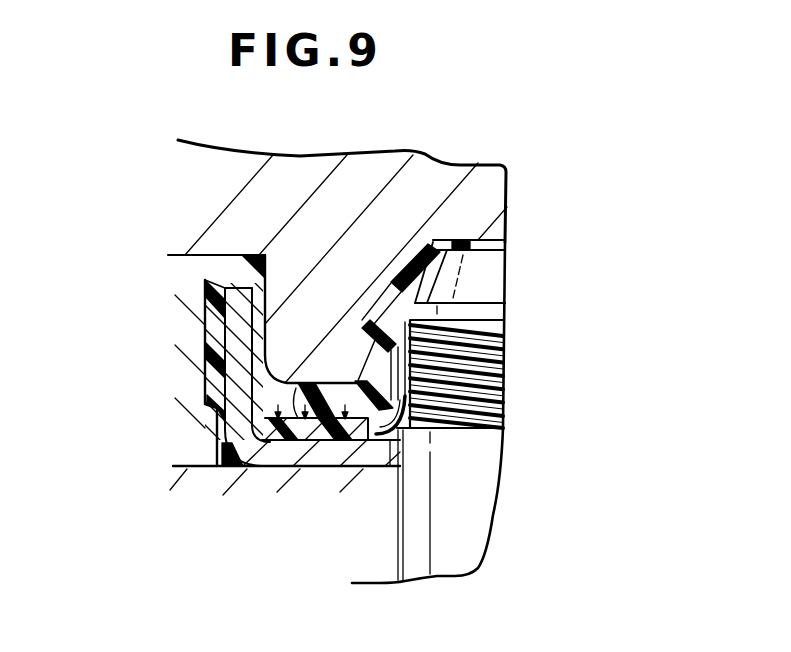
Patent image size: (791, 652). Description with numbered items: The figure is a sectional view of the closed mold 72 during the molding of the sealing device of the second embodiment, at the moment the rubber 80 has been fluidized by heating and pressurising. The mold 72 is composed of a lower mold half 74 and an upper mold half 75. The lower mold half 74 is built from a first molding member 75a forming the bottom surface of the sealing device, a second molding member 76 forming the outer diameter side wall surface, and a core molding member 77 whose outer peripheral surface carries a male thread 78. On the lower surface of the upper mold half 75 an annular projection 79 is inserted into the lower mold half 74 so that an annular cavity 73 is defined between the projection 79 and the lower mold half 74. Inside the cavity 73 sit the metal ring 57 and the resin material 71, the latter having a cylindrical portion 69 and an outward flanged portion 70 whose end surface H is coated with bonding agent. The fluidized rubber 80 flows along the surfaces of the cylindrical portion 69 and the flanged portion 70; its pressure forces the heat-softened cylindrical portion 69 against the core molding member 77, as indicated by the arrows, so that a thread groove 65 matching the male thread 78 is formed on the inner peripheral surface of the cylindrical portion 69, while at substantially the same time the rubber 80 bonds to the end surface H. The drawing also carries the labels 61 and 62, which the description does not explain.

The upper mold half 75 is at (447, 182).
The rubber 80 is at (233, 253).
The cylindrical portion 69 is at (352, 322).
The male thread 78 is at (505, 363).
The thread groove 65 is at (473, 428).
The core molding member 77 is at (482, 490).
The metal insert ring 61 is at (228, 365).
The second molding member 76 is at (190, 262).
The cavity 73 is at (207, 300).
The annular projection 79 is at (222, 330).
The outward flanged portion 70 is at (309, 381).
The metal ring 57 is at (275, 462).
The lower flange 62 is at (325, 460).
The first molding member 75a is at (186, 468).
The resin material 71 is at (375, 455).
The mold 72 is at (552, 200).
The lower mold half 74 is at (205, 490).
The end surface of the flanged portion H is at (222, 432).